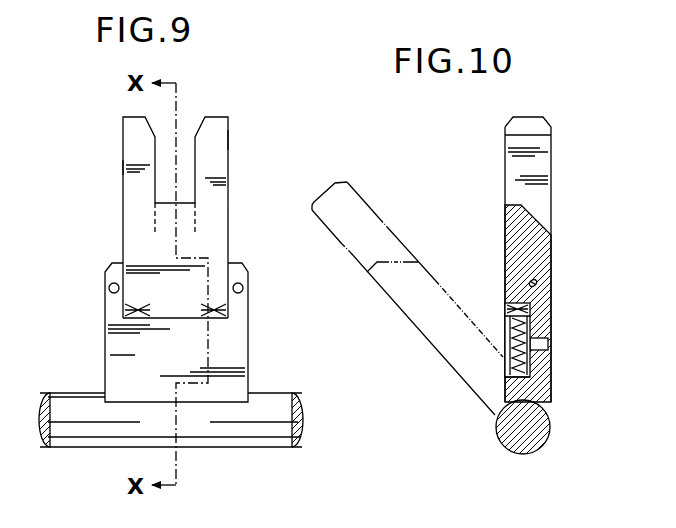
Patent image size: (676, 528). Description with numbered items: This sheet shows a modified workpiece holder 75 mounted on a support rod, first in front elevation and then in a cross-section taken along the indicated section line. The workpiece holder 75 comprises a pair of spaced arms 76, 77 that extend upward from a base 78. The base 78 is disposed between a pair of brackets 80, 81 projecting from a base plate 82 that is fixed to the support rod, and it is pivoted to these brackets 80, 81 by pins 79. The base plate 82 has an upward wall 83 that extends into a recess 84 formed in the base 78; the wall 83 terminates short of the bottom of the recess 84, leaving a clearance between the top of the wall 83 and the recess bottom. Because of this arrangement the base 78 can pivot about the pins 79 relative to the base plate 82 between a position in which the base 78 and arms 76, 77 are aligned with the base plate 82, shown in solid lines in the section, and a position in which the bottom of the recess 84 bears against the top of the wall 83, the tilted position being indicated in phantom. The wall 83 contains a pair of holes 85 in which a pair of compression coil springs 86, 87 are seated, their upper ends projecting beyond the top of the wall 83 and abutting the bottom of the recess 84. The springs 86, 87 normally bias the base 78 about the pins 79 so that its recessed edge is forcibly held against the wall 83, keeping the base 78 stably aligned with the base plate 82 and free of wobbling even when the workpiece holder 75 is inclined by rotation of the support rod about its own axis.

In FIG. 9, the workpiece holder 75 is at (121, 136).
In FIG. 10, the workpiece holder 75 is at (555, 195).
In FIG. 9, the arm 76 is at (125, 168).
In FIG. 9, the arm 77 is at (222, 147).
In FIG. 9, the base 78 is at (188, 223).
In FIG. 10, the base 78 is at (545, 248).
In FIG. 10, the pin 79 is at (547, 283).
In FIG. 9, the bracket 80 is at (112, 268).
In FIG. 9, the bracket 81 is at (247, 273).
In FIG. 9, the base plate 82 is at (233, 362).
In FIG. 10, the base plate 82 is at (548, 378).
In FIG. 10, the upward wall 83 is at (505, 330).
In FIG. 10, the recess 84 is at (533, 313).
In FIG. 10, the hole 85 is at (503, 370).
In FIG. 9, the compression coil spring 86 is at (121, 311).
In FIG. 9, the compression coil spring 87 is at (232, 309).
In FIG. 10, the compression coil spring 87 is at (505, 312).